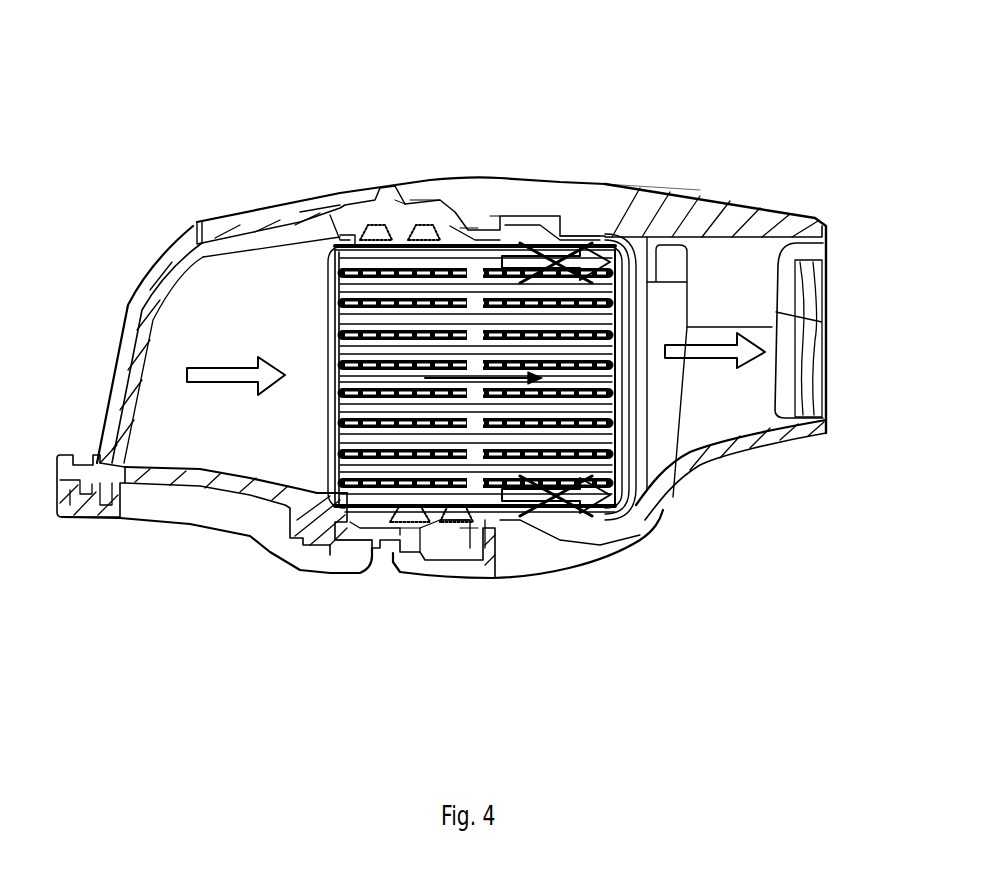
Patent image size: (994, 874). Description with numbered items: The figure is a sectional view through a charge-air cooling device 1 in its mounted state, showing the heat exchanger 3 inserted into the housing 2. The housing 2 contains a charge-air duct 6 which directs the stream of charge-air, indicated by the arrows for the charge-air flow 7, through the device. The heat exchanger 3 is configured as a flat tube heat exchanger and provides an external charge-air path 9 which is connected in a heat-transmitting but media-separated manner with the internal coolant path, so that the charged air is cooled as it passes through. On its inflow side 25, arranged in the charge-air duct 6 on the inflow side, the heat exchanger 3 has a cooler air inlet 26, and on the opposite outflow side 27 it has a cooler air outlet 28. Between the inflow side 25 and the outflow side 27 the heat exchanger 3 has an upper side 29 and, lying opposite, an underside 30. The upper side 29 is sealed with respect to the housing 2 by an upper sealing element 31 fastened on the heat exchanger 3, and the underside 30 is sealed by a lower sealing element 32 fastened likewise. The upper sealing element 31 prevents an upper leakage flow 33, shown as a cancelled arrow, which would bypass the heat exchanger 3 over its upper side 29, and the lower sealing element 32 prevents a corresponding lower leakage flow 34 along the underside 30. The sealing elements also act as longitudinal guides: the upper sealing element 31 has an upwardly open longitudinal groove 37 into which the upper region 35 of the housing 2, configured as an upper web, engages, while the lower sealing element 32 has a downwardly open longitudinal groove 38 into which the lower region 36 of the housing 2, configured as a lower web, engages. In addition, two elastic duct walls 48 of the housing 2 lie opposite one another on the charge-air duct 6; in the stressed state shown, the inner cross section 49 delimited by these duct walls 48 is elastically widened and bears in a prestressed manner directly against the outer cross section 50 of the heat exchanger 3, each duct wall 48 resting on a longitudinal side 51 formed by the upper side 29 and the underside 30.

The charge-air cooling device 1 is at (180, 142).
The housing 2 is at (760, 200).
The heat exchanger 3 is at (622, 462).
The charge-air duct 6 is at (232, 443).
The charge-air flow 7 is at (212, 375).
The external charge-air path 9 is at (470, 376).
The inflow side 25 is at (337, 438).
The cooler air inlet 26 is at (340, 325).
The outflow side 27 is at (700, 190).
The cooler air outlet 28 is at (647, 443).
The upper side 29 is at (510, 245).
The underside 30 is at (556, 553).
The upper sealing element 31 is at (340, 232).
The lower sealing element 32 is at (356, 545).
The upper leakage flow 33 is at (560, 240).
The lower leakage flow 34 is at (563, 553).
The upper region 35 is at (420, 198).
The lower region 36 is at (402, 547).
The upwardly open longitudinal groove 37 is at (420, 228).
The downwardly open longitudinal groove 38 is at (398, 535).
The elastic duct wall 48 is at (470, 228).
The inner cross section 49 is at (470, 512).
The outer cross section 50 is at (500, 222).
The longitudinal side 51 is at (556, 359).